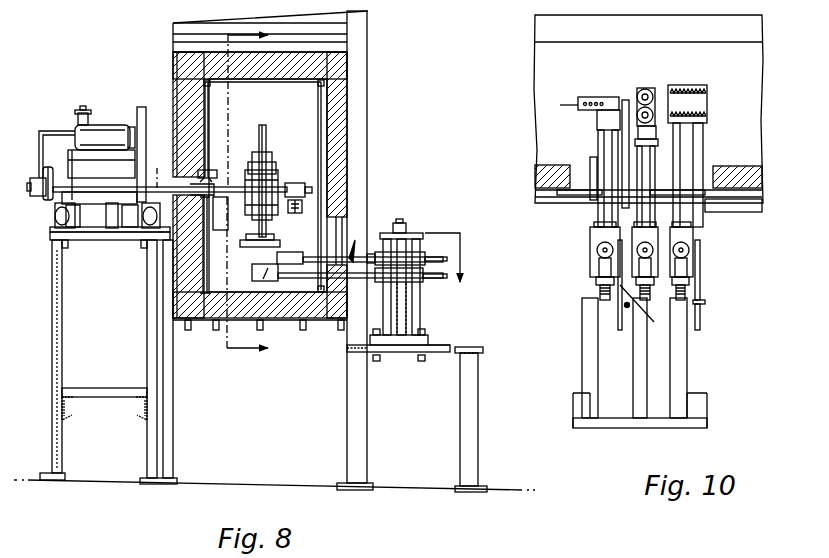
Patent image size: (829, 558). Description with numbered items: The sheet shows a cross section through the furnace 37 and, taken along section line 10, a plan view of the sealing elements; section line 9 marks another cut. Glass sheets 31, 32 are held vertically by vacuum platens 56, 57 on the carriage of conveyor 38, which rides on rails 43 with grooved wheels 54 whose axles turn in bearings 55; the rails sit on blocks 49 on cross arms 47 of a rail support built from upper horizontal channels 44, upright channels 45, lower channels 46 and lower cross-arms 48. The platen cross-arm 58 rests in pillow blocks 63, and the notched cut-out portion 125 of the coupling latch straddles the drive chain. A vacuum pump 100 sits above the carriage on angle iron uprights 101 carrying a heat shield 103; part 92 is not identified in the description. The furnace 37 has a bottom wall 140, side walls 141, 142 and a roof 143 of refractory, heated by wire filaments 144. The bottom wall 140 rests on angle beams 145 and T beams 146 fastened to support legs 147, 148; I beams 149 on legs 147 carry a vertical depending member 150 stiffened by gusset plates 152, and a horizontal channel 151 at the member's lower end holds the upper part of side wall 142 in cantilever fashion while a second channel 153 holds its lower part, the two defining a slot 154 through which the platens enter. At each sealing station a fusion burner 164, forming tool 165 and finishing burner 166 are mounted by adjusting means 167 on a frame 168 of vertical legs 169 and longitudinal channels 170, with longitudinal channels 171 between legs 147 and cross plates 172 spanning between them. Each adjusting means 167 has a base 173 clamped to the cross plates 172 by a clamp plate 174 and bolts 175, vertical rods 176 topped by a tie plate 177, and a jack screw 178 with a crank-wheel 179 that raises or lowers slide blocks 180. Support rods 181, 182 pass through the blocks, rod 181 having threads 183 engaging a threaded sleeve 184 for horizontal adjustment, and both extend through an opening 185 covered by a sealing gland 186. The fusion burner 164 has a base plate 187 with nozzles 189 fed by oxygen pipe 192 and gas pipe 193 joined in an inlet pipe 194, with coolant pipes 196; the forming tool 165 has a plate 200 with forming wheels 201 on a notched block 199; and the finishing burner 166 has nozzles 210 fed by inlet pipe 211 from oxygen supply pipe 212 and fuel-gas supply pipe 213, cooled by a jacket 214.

In FIG. 8, the section line 9- 9 is at (278, 42).
In FIG. 8, the section line 10 is at (149, 165).
In FIG. 8, the glass sheet 31 is at (267, 140).
In FIG. 8, the glass sheet 32 is at (265, 128).
In FIG. 8, the furnace 37 is at (136, 64).
In FIG. 10, the furnace 37 is at (745, 71).
In FIG. 8, the conveyor 38 is at (73, 118).
In FIG. 8, the rails 43 is at (58, 226).
In FIG. 8, the horizontal channels 44 is at (62, 250).
In FIG. 8, the upright channels 45 is at (52, 318).
In FIG. 8, the horizontal channels 46 is at (67, 420).
In FIG. 8, the cross arms 47 is at (94, 241).
In FIG. 8, the cross-arms 48 is at (98, 388).
In FIG. 8, the blocks 49 is at (52, 233).
In FIG. 8, the grooved wheels 54 is at (55, 212).
In FIG. 8, the bearings 55 is at (72, 228).
In FIG. 8, the vacuum platen 56 is at (279, 170).
In FIG. 8, the vacuum platen 57 is at (250, 172).
In FIG. 8, the cross-arm 58 is at (295, 213).
In FIG. 8, the pillow blocks 63 is at (294, 183).
In FIG. 8, the hand wheel 92 is at (42, 196).
In FIG. 8, the vacuum pump 100 is at (112, 123).
In FIG. 8, the angle iron uprights 101 is at (141, 107).
In FIG. 8, the heat shield 103 is at (95, 155).
In FIG. 8, the notched cut-out portion 125 is at (112, 228).
In FIG. 8, the bottom wall 140 is at (205, 310).
In FIG. 10, the bottom wall 140 is at (548, 100).
In FIG. 8, the side wall 141 is at (336, 95).
In FIG. 10, the side wall 141 is at (545, 175).
In FIG. 8, the side wall 142 is at (190, 112).
In FIG. 8, the roof 143 is at (300, 70).
In FIG. 8, the wire filaments 144 is at (210, 119).
In FIG. 8, the angle beams 145 is at (188, 330).
In FIG. 8, the T beams 146 is at (262, 330).
In FIG. 8, the support legs 147 is at (367, 106).
In FIG. 8, the support legs 148 is at (173, 370).
In FIG. 8, the I beams 149 is at (173, 34).
In FIG. 8, the vertical depending member 150 is at (173, 52).
In FIG. 8, the horizontal channel 151 is at (212, 170).
In FIG. 8, the gusset plates 152 is at (330, 20).
In FIG. 8, the second channel 153 is at (208, 215).
In FIG. 10, the second channel 153 is at (560, 37).
In FIG. 8, the slot 154 is at (205, 197).
In FIG. 10, the slot 154 is at (583, 28).
In FIG. 10, the fusion burner 164 is at (703, 86).
In FIG. 8, the forming tool 165 is at (262, 250).
In FIG. 10, the forming tool 165 is at (655, 126).
In FIG. 8, the finishing burner 166 is at (262, 278).
In FIG. 10, the finishing burner 166 is at (600, 96).
In FIG. 8, the adjusting means 167 is at (456, 325).
In FIG. 8, the frame 168 is at (478, 347).
In FIG. 10, the frame 168 is at (710, 386).
In FIG. 8, the vertical legs 169 is at (470, 388).
In FIG. 8, the longitudinal channels 170 is at (480, 355).
In FIG. 10, the longitudinal channels 170 is at (600, 418).
In FIG. 8, the longitudinal channels 171 is at (362, 352).
In FIG. 8, the cross plates 172 is at (442, 352).
In FIG. 10, the cross plates 172 is at (590, 363).
In FIG. 8, the base 173 is at (410, 342).
In FIG. 8, the clamp plate 174 is at (378, 362).
In FIG. 8, the bolts 175 is at (421, 362).
In FIG. 8, the vertical rods 176 is at (409, 308).
In FIG. 8, the tie plate 177 is at (420, 238).
In FIG. 10, the tie plate 177 is at (598, 282).
In FIG. 8, the jack screw 178 is at (408, 233).
In FIG. 8, the crank-wheel 179 is at (400, 219).
In FIG. 10, the crank-wheel 179 is at (598, 255).
In FIG. 8, the slide blocks 180 is at (425, 250).
In FIG. 10, the slide blocks 180 is at (600, 275).
In FIG. 10, the support rod 181 is at (598, 200).
In FIG. 10, the support rod 182 is at (612, 215).
In FIG. 10, the threads 183 is at (590, 247).
In FIG. 10, the threaded sleeve 184 is at (695, 230).
In FIG. 8, the opening 185 is at (350, 230).
In FIG. 10, the opening 185 is at (590, 172).
In FIG. 8, the sealing gland 186 is at (358, 245).
In FIG. 10, the sealing gland 186 is at (560, 195).
In FIG. 10, the base plate 187 is at (708, 118).
In FIG. 10, the nozzles 189 is at (708, 95).
In FIG. 10, the oxygen pipe 192 is at (700, 320).
In FIG. 10, the gas pipe 193 is at (706, 303).
In FIG. 10, the inlet pipe 194 is at (702, 290).
In FIG. 10, the coolant pipes 196 is at (763, 206).
In FIG. 10, the notched block 199 is at (598, 118).
In FIG. 10, the plate 200 is at (642, 86).
In FIG. 10, the forming wheels 201 is at (648, 86).
In FIG. 10, the nozzles 210 is at (578, 107).
In FIG. 10, the inlet pipe 211 is at (650, 312).
In FIG. 10, the oxygen supply pipe 212 is at (618, 310).
In FIG. 10, the fuel-gas supply pipe 213 is at (625, 306).
In FIG. 10, the jacket 214 is at (625, 100).